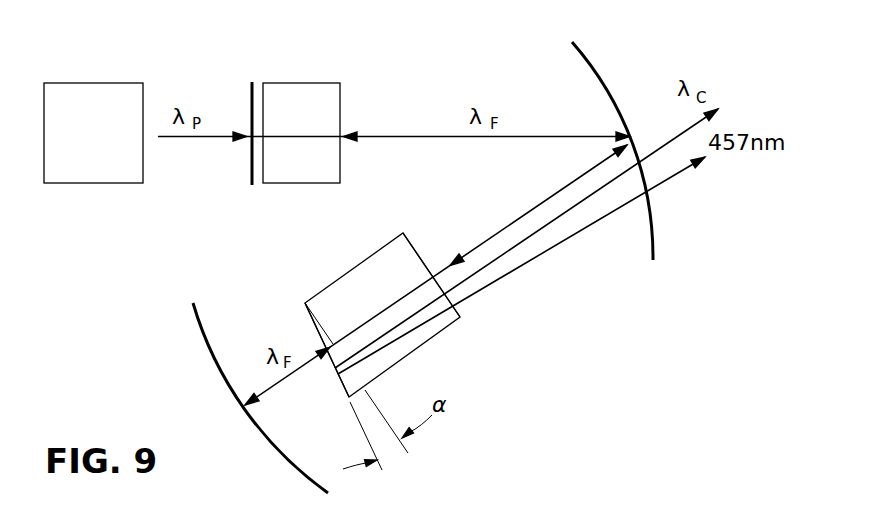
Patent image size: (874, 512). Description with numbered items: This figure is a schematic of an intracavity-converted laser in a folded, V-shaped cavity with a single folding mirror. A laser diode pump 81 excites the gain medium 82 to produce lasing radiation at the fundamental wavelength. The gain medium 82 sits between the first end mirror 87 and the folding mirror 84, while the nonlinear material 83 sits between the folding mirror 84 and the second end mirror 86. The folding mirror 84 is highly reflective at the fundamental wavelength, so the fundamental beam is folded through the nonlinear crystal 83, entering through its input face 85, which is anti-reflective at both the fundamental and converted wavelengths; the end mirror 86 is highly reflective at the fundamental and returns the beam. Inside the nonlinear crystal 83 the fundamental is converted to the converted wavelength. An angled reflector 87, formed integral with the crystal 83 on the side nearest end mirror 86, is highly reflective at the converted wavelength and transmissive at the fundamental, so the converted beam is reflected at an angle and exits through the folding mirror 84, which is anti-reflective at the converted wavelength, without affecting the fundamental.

The laser diode pump 81 is at (88, 83).
The gain medium 82 is at (300, 83).
The nonlinear material 83 is at (352, 270).
The folding mirror 84 is at (650, 250).
The input face 85 is at (415, 252).
The second end mirror 86 is at (203, 330).
The angled reflector 87 is at (337, 372).